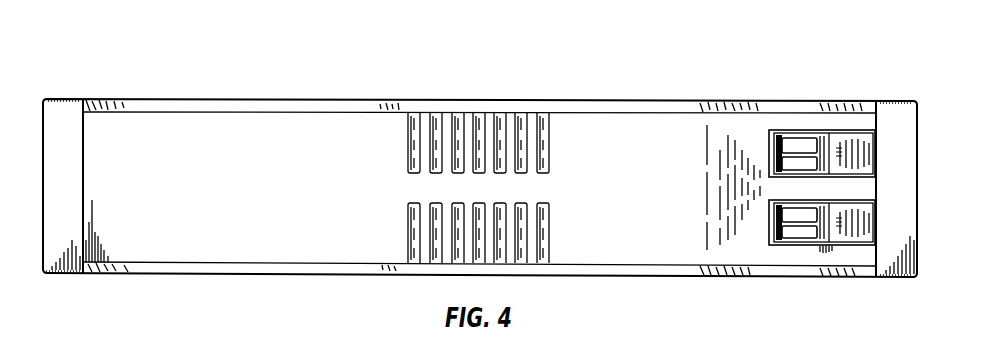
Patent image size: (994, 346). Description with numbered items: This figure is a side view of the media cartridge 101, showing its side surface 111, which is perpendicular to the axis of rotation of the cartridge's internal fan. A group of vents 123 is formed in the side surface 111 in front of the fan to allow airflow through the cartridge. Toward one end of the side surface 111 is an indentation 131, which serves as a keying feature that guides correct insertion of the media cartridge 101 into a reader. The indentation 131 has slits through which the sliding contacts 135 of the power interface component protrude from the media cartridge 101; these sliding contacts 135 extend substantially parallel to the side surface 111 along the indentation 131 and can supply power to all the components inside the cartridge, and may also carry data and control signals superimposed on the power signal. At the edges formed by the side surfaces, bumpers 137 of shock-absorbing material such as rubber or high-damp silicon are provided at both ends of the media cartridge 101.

The media cartridge 101 is at (155, 68).
The side surface 111 is at (222, 253).
The vents 123 is at (497, 115).
The indentation 131 is at (792, 293).
The sliding contacts 135 is at (800, 143).
The bumpers 137 is at (58, 100).